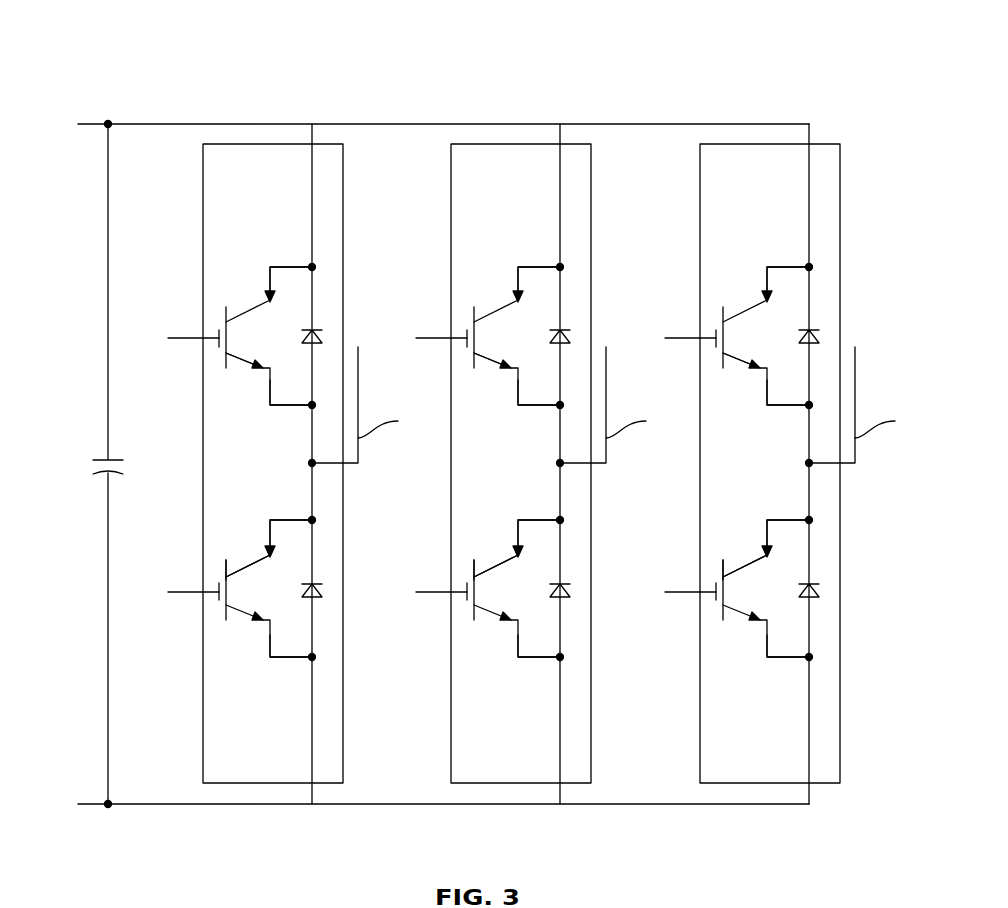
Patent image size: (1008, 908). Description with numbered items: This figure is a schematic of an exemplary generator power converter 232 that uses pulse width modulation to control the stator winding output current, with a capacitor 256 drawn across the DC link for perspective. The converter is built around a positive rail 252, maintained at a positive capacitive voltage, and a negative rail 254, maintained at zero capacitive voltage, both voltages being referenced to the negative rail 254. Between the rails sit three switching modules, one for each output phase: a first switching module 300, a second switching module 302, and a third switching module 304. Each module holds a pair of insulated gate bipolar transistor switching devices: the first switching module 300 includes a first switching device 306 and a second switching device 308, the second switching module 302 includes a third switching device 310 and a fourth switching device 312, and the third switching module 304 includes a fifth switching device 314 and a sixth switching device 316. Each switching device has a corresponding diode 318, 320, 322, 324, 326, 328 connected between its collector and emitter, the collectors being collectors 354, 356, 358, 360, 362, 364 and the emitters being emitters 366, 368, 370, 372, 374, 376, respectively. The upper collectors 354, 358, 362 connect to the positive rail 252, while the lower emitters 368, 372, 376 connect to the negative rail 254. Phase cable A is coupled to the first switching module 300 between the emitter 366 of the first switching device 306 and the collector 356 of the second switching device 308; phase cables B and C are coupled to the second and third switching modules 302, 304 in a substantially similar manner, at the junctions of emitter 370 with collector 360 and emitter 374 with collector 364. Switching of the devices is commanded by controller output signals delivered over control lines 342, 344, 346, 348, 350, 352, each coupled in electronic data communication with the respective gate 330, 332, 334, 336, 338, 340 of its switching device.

The generator power converter 232 is at (136, 50).
The positive rail 252 is at (148, 123).
The negative rail 254 is at (150, 806).
The capacitor 256 is at (106, 460).
The first switching module 300 is at (273, 785).
The second switching module 302 is at (521, 785).
The third switching module 304 is at (770, 785).
The first switching device 306 is at (243, 310).
The second switching device 308 is at (248, 622).
The third switching device 310 is at (491, 310).
The fourth switching device 312 is at (496, 622).
The fifth switching device 314 is at (740, 310).
The sixth switching device 316 is at (745, 622).
The diode 318 is at (313, 298).
The diode 320 is at (313, 631).
The diode 322 is at (561, 298).
The diode 324 is at (561, 631).
The diode 326 is at (810, 298).
The diode 328 is at (810, 631).
The gate 330 is at (225, 360).
The gate 332 is at (225, 569).
The gate 334 is at (473, 360).
The gate 336 is at (473, 569).
The gate 338 is at (722, 360).
The gate 340 is at (722, 569).
The control line 342 is at (185, 339).
The control line 344 is at (185, 591).
The control line 346 is at (433, 339).
The control line 348 is at (433, 591).
The control line 350 is at (682, 339).
The control line 352 is at (682, 591).
The collector 354 is at (291, 266).
The collector 356 is at (292, 518).
The collector 358 is at (539, 266).
The collector 360 is at (540, 518).
The collector 362 is at (788, 266).
The collector 364 is at (789, 518).
The emitter 366 is at (292, 407).
The emitter 368 is at (292, 660).
The emitter 370 is at (540, 407).
The emitter 372 is at (540, 660).
The emitter 374 is at (789, 407).
The emitter 376 is at (789, 660).